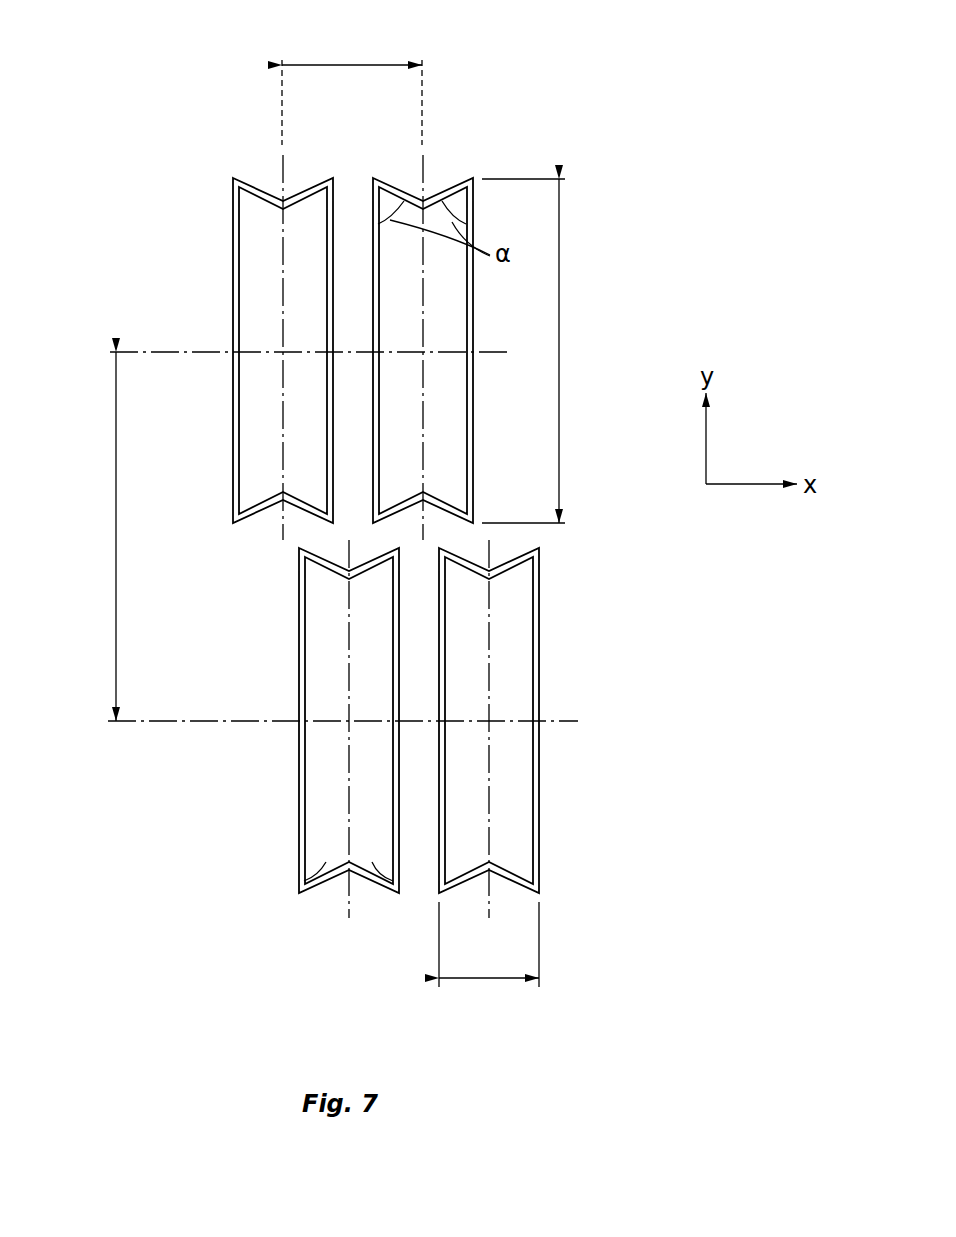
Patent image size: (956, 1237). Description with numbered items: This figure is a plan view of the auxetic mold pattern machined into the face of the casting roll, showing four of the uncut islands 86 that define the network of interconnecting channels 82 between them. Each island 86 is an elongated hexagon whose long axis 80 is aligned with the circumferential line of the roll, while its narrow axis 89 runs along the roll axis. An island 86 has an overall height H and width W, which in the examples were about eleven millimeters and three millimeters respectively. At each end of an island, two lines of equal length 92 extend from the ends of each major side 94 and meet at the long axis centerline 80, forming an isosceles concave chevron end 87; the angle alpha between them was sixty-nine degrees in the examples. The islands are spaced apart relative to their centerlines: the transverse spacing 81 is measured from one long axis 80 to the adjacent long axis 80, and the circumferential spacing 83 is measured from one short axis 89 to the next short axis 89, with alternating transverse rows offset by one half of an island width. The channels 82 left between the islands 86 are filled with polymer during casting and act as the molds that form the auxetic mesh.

The long axis 80 is at (283, 175).
The transverse spacing of the islands 81 is at (352, 62).
The channels 82 is at (465, 535).
The circumstantial spacing of the islands 83 is at (115, 531).
The islands 86 is at (248, 245).
The chevron end 87 is at (273, 182).
The narrow axis 89 is at (213, 350).
The equal length lines 92 is at (366, 880).
The major side 94 is at (392, 870).
The overall height H is at (560, 325).
The width W is at (489, 981).